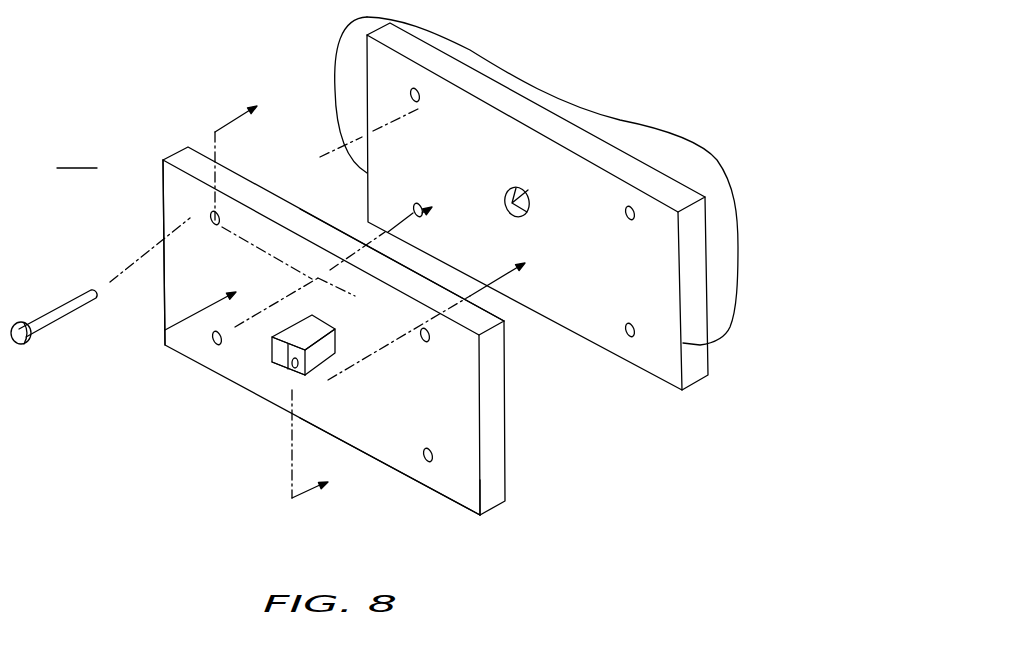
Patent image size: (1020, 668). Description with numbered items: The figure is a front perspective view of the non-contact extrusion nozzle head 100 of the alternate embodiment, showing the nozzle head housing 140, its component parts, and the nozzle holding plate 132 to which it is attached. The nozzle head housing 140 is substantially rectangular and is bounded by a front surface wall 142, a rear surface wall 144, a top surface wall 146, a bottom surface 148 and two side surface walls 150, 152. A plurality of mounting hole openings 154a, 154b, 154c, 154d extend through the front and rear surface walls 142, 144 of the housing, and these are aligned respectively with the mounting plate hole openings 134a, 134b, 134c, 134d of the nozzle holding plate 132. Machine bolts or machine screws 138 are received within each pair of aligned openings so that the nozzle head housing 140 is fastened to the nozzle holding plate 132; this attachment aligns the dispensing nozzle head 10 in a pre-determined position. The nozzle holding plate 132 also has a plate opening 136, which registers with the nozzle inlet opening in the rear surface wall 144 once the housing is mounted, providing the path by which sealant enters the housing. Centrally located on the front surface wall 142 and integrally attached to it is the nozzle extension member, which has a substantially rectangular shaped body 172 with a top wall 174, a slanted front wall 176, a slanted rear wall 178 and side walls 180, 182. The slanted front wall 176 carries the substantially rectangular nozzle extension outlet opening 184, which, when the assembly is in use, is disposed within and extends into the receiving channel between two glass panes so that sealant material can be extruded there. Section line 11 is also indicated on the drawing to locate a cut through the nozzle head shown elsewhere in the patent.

The non-contact extrusion nozzle head 100 is at (77, 155).
The dispensing nozzle head 10 is at (287, 293).
The section line 11- 11 is at (317, 244).
The nozzle holding plate 132 is at (569, 203).
The mounting plate hole opening 134a is at (420, 98).
The mounting plate hole opening 134b is at (414, 208).
The mounting plate hole opening 134c is at (632, 330).
The mounting plate hole opening 134d is at (633, 210).
The plate opening 136 is at (528, 198).
The machine bolt or machine screw 138 is at (62, 307).
The nozzle head housing 140 is at (319, 322).
The front surface wall 142 is at (395, 442).
The rear surface wall 144 is at (402, 277).
The top surface wall 146 is at (188, 158).
The bottom surface 148 is at (488, 516).
The side surface wall 150 is at (200, 222).
The side surface wall 152 is at (485, 370).
The mounting hole opening 154a is at (210, 215).
The mounting hole opening 154b is at (215, 345).
The mounting hole opening 154c is at (430, 462).
The mounting hole opening 154d is at (425, 342).
The rectangular shaped body 172 is at (289, 359).
The top wall 174 is at (262, 366).
The slanted front wall 176 is at (323, 356).
The slanted rear wall 178 is at (272, 336).
The side wall 180 is at (298, 370).
The side wall 182 is at (308, 328).
The nozzle extension outlet opening 184 is at (292, 382).